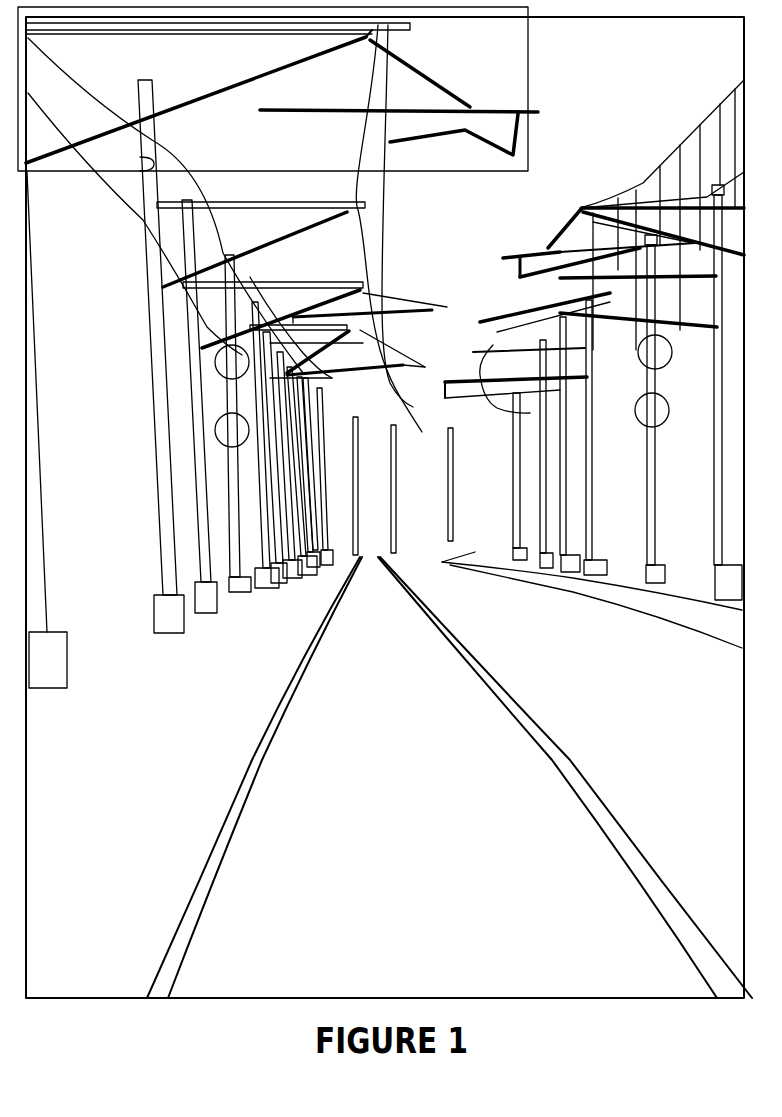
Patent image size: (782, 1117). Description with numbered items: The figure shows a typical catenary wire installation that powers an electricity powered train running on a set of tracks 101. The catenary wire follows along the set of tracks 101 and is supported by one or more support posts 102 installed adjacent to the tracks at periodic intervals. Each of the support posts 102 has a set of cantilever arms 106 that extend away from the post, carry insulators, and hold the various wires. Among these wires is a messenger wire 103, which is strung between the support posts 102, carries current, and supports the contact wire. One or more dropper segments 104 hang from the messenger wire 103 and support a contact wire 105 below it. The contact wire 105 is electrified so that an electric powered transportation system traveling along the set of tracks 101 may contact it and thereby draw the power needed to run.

The set of tracks 101 is at (590, 825).
The support posts 102 is at (205, 515).
The messenger wire 103 is at (685, 145).
The dropper segments 104 is at (650, 188).
The contact wire 105 is at (583, 233).
The cantilever arms 106 is at (508, 67).